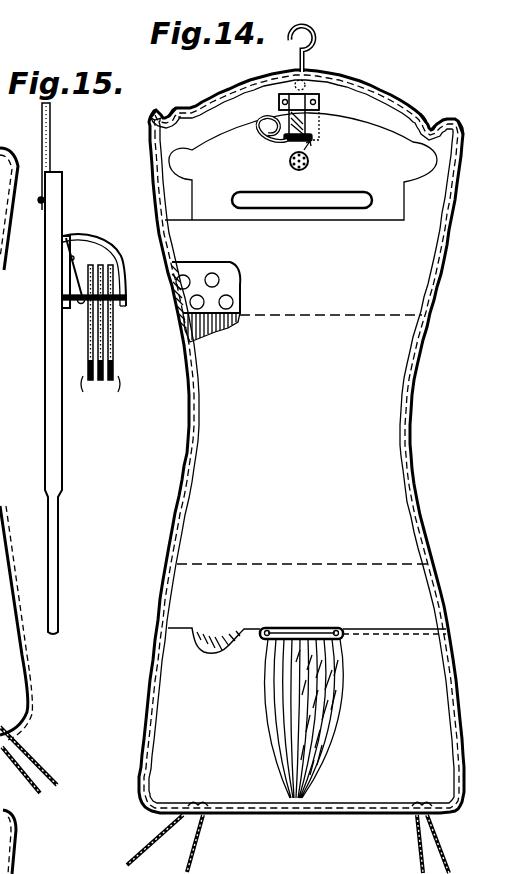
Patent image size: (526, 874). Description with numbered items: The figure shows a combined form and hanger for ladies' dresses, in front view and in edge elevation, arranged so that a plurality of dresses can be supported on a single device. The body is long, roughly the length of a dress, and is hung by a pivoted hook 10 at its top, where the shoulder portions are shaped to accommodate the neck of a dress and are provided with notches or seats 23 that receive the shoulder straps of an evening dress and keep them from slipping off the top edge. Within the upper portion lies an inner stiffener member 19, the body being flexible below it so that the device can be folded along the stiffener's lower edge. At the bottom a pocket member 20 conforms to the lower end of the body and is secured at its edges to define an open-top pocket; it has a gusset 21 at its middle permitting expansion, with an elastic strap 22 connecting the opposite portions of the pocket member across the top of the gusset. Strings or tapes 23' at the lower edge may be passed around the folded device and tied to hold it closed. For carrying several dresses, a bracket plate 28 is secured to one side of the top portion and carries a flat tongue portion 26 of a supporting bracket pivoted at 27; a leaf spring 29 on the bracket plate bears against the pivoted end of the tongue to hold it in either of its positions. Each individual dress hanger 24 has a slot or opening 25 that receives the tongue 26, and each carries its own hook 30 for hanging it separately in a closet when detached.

In FIG. 14, the pivoted hook 10 is at (316, 45).
In FIG. 15, the pivoted hook 10 is at (47, 154).
In FIG. 14, the inner stiffener member 19 is at (183, 300).
In FIG. 14, the pocket member 20 is at (384, 645).
In FIG. 14, the gusset 21 is at (299, 699).
In FIG. 14, the elastic strap 22 is at (305, 637).
In FIG. 14, the notches or seats 23 is at (289, 105).
In FIG. 15, the notches or seats 23 is at (16, 483).
In FIG. 14, the strings or tapes 23' is at (288, 837).
In FIG. 15, the strings or tapes 23' is at (40, 756).
In FIG. 14, the individual dress hanger 24 is at (393, 136).
In FIG. 15, the individual dress hanger 24 is at (100, 335).
In FIG. 14, the slot or opening 25 is at (309, 162).
In FIG. 14, the flat tongue portion 26 is at (303, 104).
In FIG. 15, the flat tongue portion 26 is at (104, 247).
In FIG. 15, the pivot 27 is at (82, 310).
In FIG. 14, the bracket plate 28 is at (281, 101).
In FIG. 15, the bracket plate 28 is at (60, 290).
In FIG. 15, the leaf spring 29 is at (72, 259).
In FIG. 14, the hook 30 is at (256, 135).